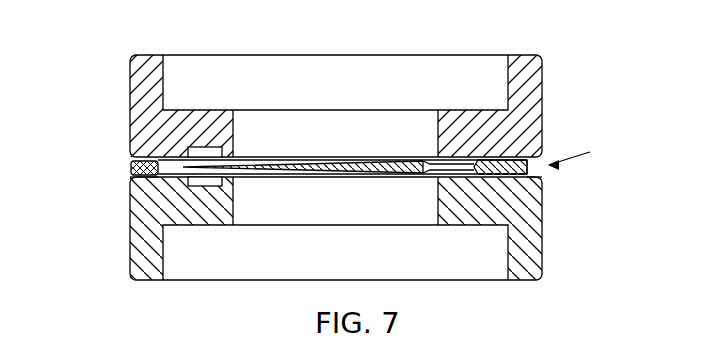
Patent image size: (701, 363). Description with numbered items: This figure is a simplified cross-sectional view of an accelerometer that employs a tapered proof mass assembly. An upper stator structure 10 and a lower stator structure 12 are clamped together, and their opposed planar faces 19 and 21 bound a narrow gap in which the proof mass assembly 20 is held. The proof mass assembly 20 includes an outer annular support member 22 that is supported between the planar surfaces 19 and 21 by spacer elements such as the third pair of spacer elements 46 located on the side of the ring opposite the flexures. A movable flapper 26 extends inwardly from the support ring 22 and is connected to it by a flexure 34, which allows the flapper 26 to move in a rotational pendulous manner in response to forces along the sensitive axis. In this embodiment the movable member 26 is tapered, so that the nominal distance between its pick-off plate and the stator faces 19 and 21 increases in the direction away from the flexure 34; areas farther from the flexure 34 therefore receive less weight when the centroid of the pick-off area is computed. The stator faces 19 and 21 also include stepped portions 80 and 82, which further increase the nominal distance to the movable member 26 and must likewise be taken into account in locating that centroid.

The upper stator structure 10 is at (530, 73).
The lower stator structure 12 is at (532, 255).
The planar surface of upper stator 19 is at (532, 160).
The proof mass assembly 20 is at (583, 153).
The planar surface of lower stator 21 is at (532, 175).
The outer annular support member 22 is at (130, 168).
The flapper 26 is at (253, 162).
The flexure element 34 is at (457, 171).
The third pair of spacer elements 46 is at (133, 177).
The stepped portion of upper stator face 80 is at (205, 147).
The stepped portion of lower stator face 82 is at (202, 192).